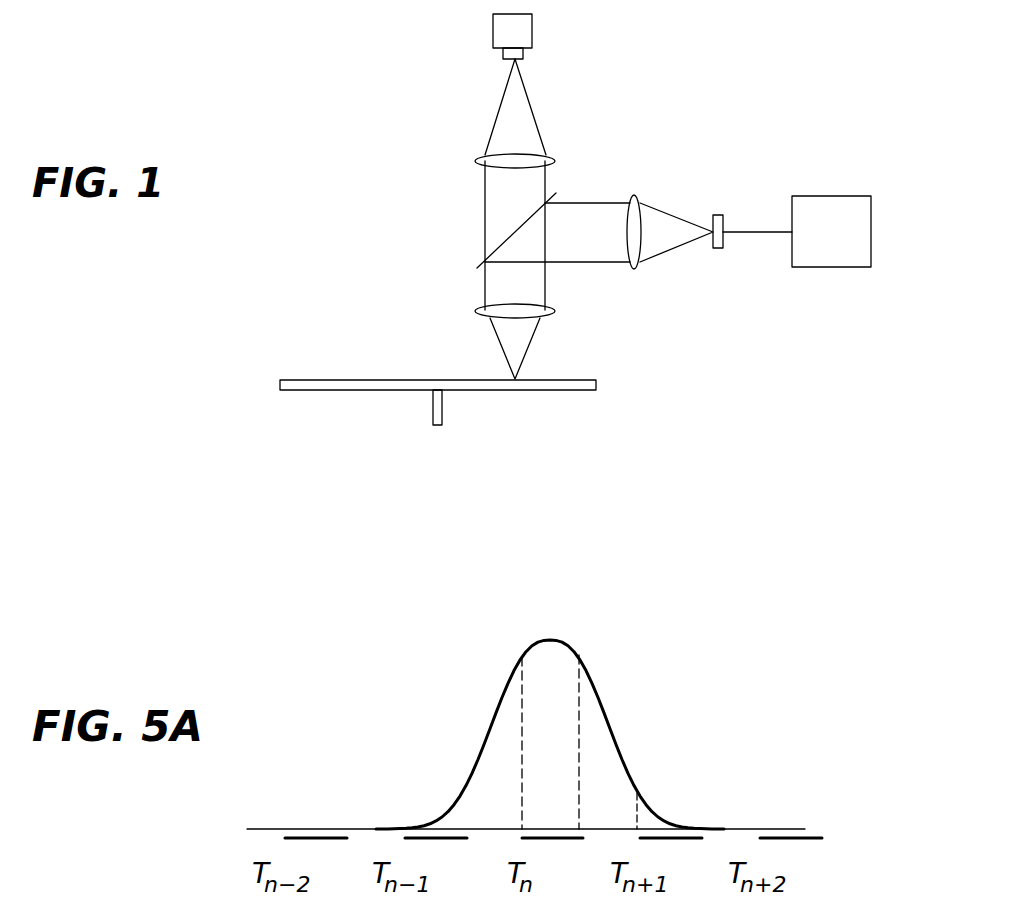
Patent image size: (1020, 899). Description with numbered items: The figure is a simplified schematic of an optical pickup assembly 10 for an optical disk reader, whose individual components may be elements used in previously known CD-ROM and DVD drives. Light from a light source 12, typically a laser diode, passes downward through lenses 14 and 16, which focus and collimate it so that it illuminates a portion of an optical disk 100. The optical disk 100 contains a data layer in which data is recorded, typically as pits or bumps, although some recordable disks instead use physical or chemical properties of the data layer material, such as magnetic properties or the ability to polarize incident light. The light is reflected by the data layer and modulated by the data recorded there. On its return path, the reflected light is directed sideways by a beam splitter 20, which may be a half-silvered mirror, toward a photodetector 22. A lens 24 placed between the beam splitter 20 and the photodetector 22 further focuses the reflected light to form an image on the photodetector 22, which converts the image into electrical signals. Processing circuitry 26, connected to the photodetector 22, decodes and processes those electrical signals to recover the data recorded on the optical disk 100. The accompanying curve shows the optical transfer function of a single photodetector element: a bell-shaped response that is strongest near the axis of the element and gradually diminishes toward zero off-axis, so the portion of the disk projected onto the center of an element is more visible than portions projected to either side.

The optical pickup assembly 10 is at (645, 52).
The light source 12 is at (493, 30).
The lens 14 is at (476, 159).
The lens 16 is at (476, 311).
The beam splitter 20 is at (477, 265).
The photodetector 22 is at (718, 250).
The lens 24 is at (630, 195).
The processing circuitry 26 is at (820, 196).
The optical disk 100 is at (280, 386).